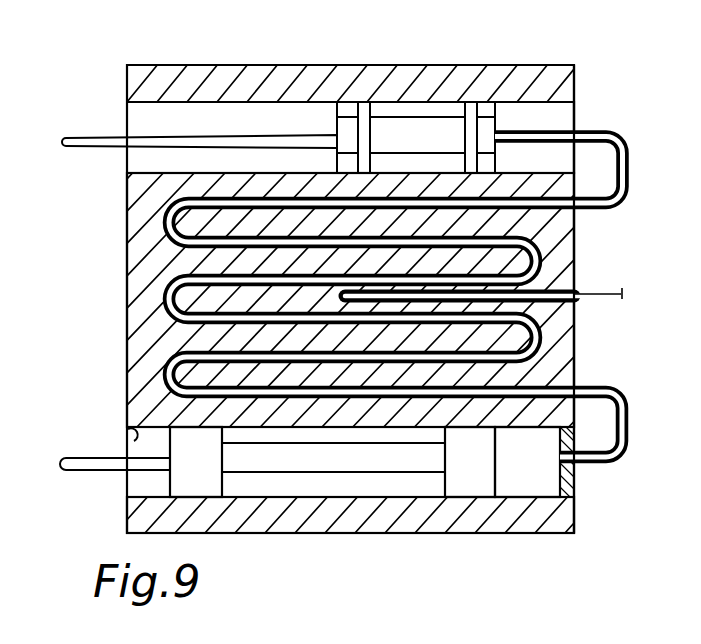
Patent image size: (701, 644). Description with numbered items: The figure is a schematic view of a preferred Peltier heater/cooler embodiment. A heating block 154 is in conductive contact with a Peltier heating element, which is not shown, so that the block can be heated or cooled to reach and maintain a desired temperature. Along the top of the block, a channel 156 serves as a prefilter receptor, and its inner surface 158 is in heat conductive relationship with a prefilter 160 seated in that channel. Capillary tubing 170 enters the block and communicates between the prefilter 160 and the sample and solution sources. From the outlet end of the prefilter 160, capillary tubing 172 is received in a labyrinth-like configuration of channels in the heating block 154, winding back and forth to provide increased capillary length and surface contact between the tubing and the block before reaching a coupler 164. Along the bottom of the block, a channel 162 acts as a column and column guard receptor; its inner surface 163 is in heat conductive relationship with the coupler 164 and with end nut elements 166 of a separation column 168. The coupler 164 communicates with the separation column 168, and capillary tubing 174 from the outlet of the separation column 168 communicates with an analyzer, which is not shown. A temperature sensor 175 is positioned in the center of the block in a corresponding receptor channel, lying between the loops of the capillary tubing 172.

The heating block 154 is at (578, 366).
The channel 156 is at (583, 124).
The inner surface 158 is at (538, 101).
The prefilter 160 is at (402, 106).
The channel 162 is at (120, 476).
The inner surface 163 is at (128, 438).
The coupler 164 is at (545, 474).
The end nut elements 166 is at (218, 479).
The separation column 168 is at (360, 463).
The capillary tubing 170 is at (102, 138).
The capillary tubing 172 is at (540, 252).
The capillary tubing 174 is at (78, 467).
The temperature sensor 175 is at (552, 302).